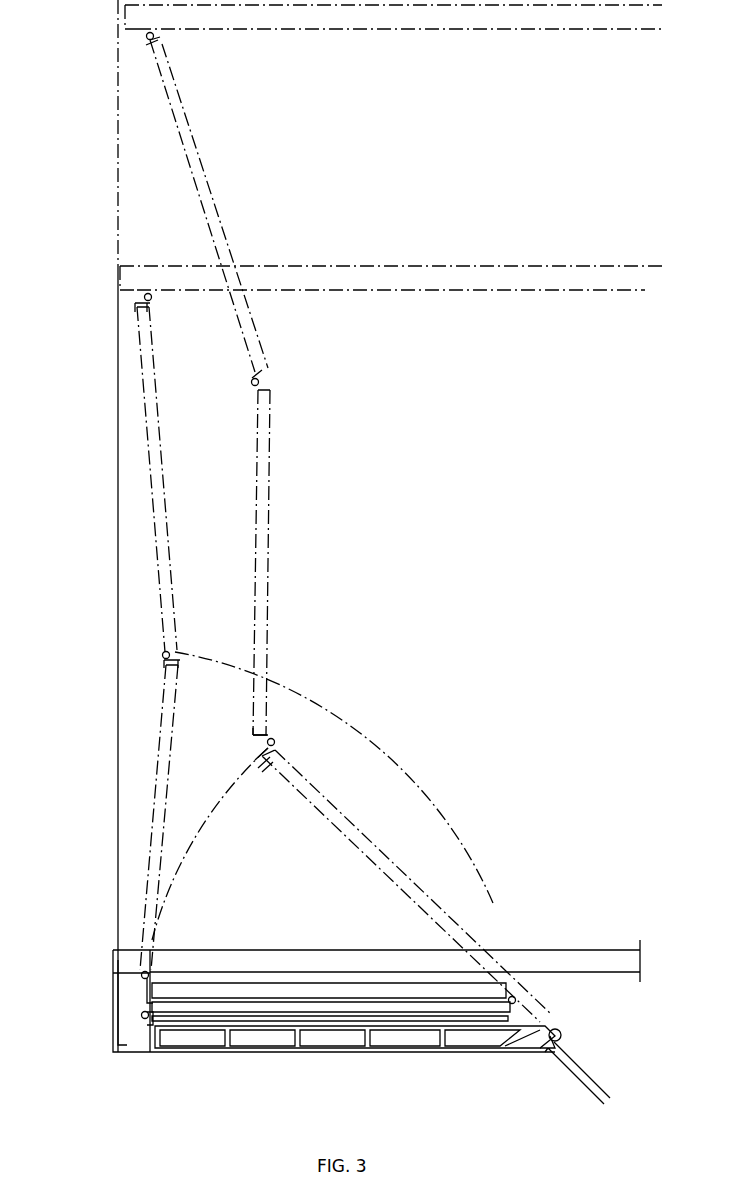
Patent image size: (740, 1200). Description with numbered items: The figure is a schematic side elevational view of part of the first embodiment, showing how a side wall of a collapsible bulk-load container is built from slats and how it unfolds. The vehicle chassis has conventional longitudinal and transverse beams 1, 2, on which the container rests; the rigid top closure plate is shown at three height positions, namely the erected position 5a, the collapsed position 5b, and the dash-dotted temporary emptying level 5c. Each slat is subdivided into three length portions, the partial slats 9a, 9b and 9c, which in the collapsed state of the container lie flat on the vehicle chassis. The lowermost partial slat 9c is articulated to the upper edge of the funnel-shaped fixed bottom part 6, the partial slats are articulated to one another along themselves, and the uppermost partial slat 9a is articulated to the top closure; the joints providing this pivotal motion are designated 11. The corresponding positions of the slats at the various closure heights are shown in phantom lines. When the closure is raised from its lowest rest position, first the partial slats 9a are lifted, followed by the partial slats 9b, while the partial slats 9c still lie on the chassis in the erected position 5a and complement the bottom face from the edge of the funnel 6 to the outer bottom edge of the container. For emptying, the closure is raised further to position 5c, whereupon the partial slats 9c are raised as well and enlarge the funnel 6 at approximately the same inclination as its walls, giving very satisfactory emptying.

The longitudinal beam 1 is at (113, 1040).
The transverse beam 2 is at (325, 1040).
The erected height position of closure 5a is at (400, 283).
The collapsed height position of closure 5b is at (558, 957).
The emptying height position of closure 5c is at (400, 20).
The funnel-shaped fixed bottom part 6 is at (600, 1088).
The uppermost partial slat 9a is at (157, 462).
The middle partial slat 9b is at (162, 730).
The lowermost partial slat 9c is at (173, 1018).
The joint 11 is at (146, 36).